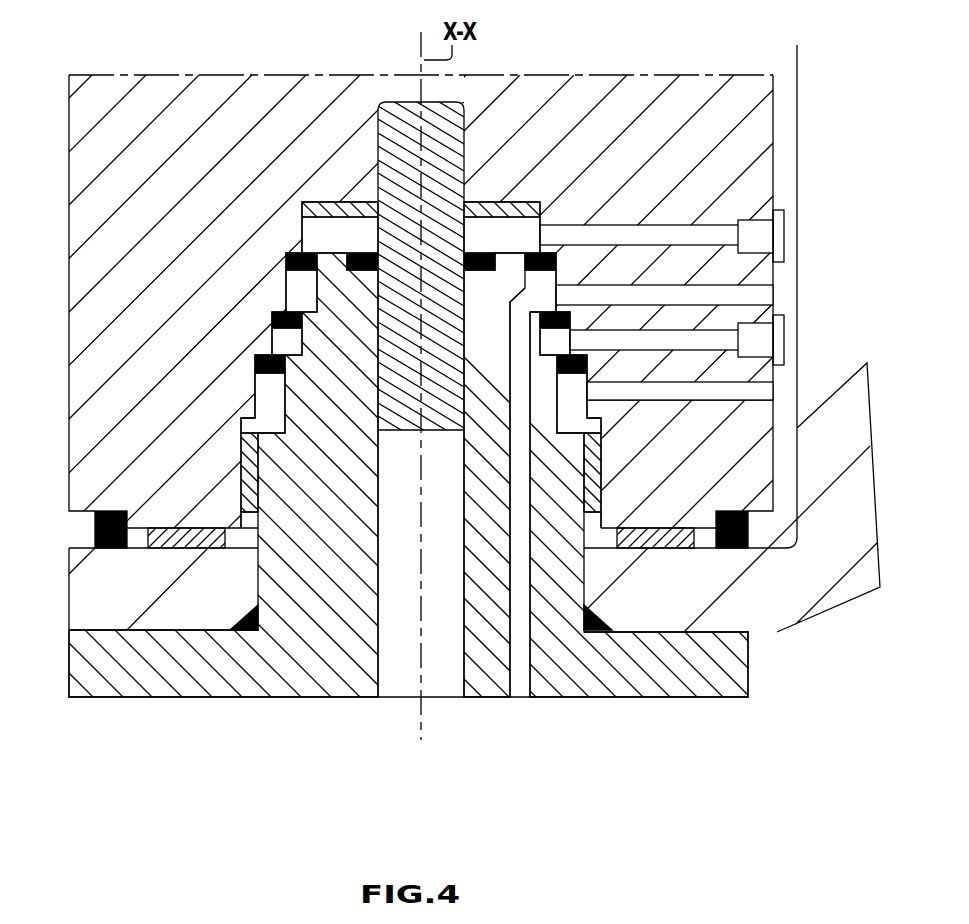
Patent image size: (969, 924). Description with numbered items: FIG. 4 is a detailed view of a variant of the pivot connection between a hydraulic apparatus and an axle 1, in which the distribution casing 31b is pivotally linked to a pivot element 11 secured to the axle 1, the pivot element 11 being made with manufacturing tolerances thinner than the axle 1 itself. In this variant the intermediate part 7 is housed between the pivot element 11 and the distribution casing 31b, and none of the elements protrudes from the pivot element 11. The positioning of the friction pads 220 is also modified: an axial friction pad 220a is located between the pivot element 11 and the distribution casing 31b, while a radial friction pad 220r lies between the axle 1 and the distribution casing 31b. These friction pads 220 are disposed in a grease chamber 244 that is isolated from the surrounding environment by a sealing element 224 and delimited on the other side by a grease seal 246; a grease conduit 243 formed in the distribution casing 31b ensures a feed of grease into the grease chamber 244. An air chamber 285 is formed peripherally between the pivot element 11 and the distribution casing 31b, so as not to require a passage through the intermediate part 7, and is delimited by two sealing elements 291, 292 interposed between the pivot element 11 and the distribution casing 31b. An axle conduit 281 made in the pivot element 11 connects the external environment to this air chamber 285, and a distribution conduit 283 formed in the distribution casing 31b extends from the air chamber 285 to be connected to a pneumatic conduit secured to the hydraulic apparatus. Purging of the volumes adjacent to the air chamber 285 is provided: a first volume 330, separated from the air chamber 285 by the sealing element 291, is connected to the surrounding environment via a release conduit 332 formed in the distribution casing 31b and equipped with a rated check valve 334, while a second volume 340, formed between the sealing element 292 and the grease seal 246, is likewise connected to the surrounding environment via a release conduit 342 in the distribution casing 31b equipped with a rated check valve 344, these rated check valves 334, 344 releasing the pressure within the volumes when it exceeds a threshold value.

The axle 1 is at (775, 603).
The intermediate part 7 is at (383, 135).
The pivot element 11 is at (592, 688).
The distribution casing 31b is at (235, 108).
The friction pads 220 is at (125, 500).
The axial friction pad 220a is at (250, 480).
The radial friction pad 220r is at (170, 528).
The sealing element 224 is at (724, 511).
The grease conduit 243 is at (743, 393).
The grease chamber 244 is at (567, 407).
The grease seal 246 is at (253, 368).
The axle conduit 281 is at (520, 503).
The distribution conduit 283 is at (715, 295).
The air chamber 285 is at (537, 295).
The sealing element 291 is at (285, 260).
The sealing element 292 is at (270, 325).
The first volume 330 is at (502, 237).
The release conduit 332 is at (637, 237).
The rated check valve 334 is at (752, 227).
The second volume 340 is at (557, 348).
The release conduit 342 is at (665, 340).
The rated check valve 344 is at (753, 348).